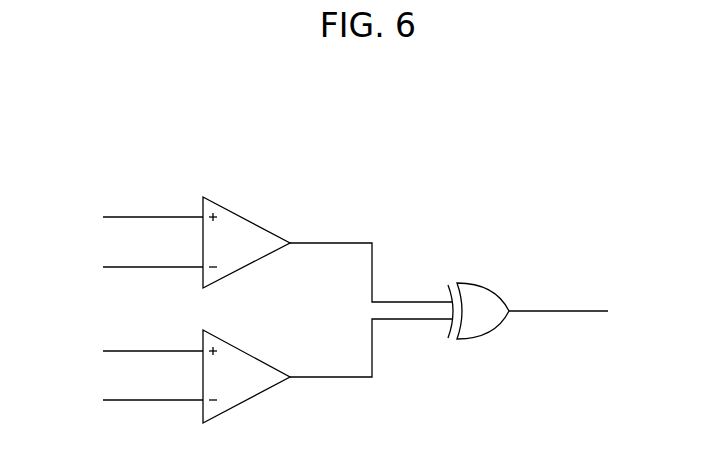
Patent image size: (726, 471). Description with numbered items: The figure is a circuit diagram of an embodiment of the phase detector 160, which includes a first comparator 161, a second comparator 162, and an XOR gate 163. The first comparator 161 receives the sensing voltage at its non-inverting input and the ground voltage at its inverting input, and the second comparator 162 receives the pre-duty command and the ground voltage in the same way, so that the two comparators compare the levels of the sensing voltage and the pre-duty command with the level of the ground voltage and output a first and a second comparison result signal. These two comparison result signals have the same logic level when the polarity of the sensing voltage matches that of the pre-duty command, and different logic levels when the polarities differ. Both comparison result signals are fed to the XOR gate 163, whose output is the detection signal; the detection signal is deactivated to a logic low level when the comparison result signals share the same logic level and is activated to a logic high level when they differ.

The phase detector 160 is at (687, 126).
The first comparator 161 is at (246, 218).
The second comparator 162 is at (244, 350).
The XOR gate 163 is at (490, 283).